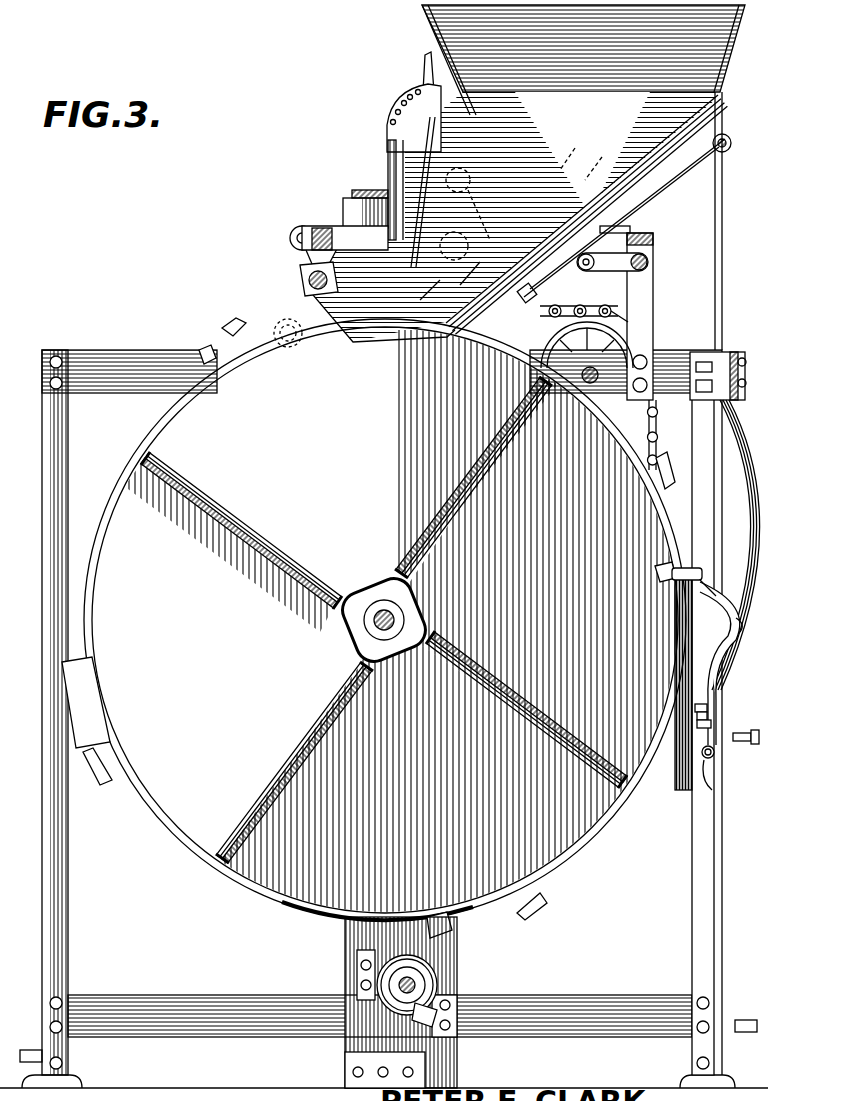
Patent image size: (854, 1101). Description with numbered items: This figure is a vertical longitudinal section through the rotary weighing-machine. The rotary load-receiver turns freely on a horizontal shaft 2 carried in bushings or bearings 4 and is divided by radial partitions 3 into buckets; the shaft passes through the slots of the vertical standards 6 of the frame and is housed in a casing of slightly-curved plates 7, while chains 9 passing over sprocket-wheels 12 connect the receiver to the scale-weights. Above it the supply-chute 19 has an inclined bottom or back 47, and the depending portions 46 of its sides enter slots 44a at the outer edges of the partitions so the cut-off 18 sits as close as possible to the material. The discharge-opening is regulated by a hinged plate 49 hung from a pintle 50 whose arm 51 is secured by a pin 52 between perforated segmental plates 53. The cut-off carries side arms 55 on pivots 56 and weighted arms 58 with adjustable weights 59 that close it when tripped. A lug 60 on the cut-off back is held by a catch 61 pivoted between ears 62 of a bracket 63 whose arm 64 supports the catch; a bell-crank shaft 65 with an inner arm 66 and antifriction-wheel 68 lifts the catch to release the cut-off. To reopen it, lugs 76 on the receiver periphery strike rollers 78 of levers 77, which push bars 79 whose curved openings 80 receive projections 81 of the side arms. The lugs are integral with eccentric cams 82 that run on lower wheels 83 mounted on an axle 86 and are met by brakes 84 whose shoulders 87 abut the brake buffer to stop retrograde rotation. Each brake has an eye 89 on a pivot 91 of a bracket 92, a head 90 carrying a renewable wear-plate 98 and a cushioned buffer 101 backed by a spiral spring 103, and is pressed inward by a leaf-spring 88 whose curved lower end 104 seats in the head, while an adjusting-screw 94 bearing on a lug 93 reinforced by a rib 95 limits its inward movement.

The horizontal shaft 2 is at (374, 621).
The radial partitions 3 is at (258, 540).
The bushings or bearings 4 is at (383, 600).
The vertical standards or guides 6 is at (347, 935).
The slightly-curved plates 7 is at (350, 585).
The chains 9 is at (658, 440).
The sprocket-wheels 12 is at (622, 332).
The cut-off 18 is at (475, 343).
The supply-chute 19 is at (529, 177).
The slots 44a is at (225, 850).
The depending portions 46 is at (337, 240).
The bottom or back of the supply-chute 47 is at (469, 248).
The hinged plate 49 is at (430, 172).
The shaft or pintle 50 is at (462, 112).
The arm 51 is at (424, 60).
The pin or key 52 is at (418, 88).
The segmental plates 53 is at (387, 106).
The upwardly-extending arms 55 is at (482, 210).
The pivots 56 is at (472, 182).
The weighted arms 58 is at (603, 156).
The adjustable weights 59 is at (578, 146).
The lug 60 is at (565, 305).
The catch 61 is at (656, 150).
The ears 62 is at (731, 143).
The bracket 63 is at (674, 185).
The arm 64 is at (630, 230).
The shaft 65 is at (655, 265).
The inner arm 66 is at (612, 263).
The antifriction-wheel 68 is at (606, 305).
The lugs 76 is at (238, 320).
The levers 77 is at (298, 252).
The antifriction wheels or rollers 78 is at (284, 348).
The bars 79 is at (355, 225).
The curved openings 80 is at (436, 291).
The projections 81 is at (465, 273).
The eccentrically-arranged cams 82 is at (262, 325).
The lower wheels 83 is at (440, 990).
The brakes 84 is at (722, 690).
The transverse shaft or axle 86 is at (432, 972).
The shoulders 87 is at (92, 660).
The leaf-spring 88 is at (745, 530).
The eye or bearing 89 is at (714, 782).
The head 90 is at (738, 633).
The horizontal pivot 91 is at (715, 752).
The bracket or plate 92 is at (695, 706).
The lug 93 is at (697, 724).
The adjusting-screw 94 is at (752, 733).
The rib 95 is at (697, 716).
The wear-plate 98 is at (675, 606).
The cushioned stop or buffer 101 is at (703, 575).
The spiral spring 103 is at (722, 598).
The lower end of the leaf-spring 104 is at (742, 623).